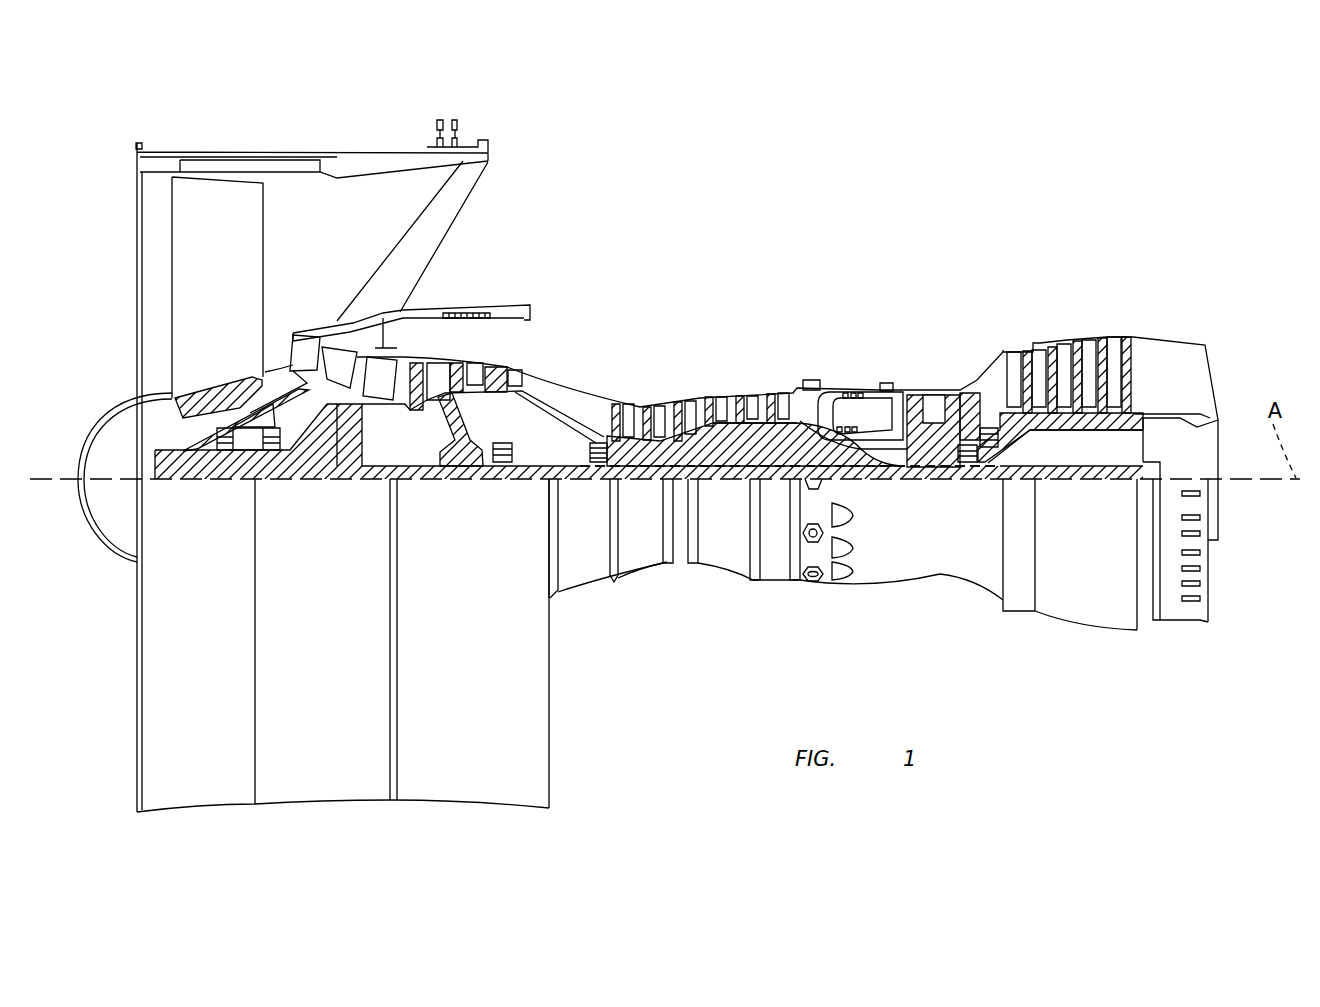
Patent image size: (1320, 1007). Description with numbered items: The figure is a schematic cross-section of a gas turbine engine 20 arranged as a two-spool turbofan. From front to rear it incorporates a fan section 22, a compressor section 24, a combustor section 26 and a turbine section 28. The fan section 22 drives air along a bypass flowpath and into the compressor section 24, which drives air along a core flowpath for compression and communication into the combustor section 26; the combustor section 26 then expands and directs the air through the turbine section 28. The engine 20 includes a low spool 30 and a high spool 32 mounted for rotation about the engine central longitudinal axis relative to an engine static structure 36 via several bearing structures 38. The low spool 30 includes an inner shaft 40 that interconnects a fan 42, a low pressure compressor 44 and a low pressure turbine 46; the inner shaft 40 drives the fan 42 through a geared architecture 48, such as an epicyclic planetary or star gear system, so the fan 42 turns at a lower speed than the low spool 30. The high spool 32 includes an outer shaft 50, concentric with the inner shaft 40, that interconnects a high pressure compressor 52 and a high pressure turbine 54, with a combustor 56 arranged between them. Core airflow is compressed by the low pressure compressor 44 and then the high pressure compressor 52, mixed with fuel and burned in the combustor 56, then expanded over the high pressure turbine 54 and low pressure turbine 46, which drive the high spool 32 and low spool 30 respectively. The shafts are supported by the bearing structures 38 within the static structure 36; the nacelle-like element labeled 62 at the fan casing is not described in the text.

The gas turbine engine 20 is at (891, 195).
The fan section 22 is at (132, 130).
The compressor section 24 is at (403, 270).
The combustor section 26 is at (802, 270).
The turbine section 28 is at (1148, 270).
The low spool 30 is at (730, 480).
The high spool 32 is at (772, 442).
The engine static structure 36 is at (777, 575).
The bearing structures 38 is at (227, 448).
The inner shaft 40 is at (578, 475).
The fan 42 is at (222, 297).
The low pressure compressor 44 is at (477, 372).
The low pressure turbine 46 is at (1073, 345).
The geared architecture 48 is at (346, 452).
The outer shaft 50 is at (848, 462).
The high pressure compressor 52 is at (715, 445).
The high pressure turbine 54 is at (930, 387).
The combustor 56 is at (857, 417).
The nacelle 62 is at (398, 160).